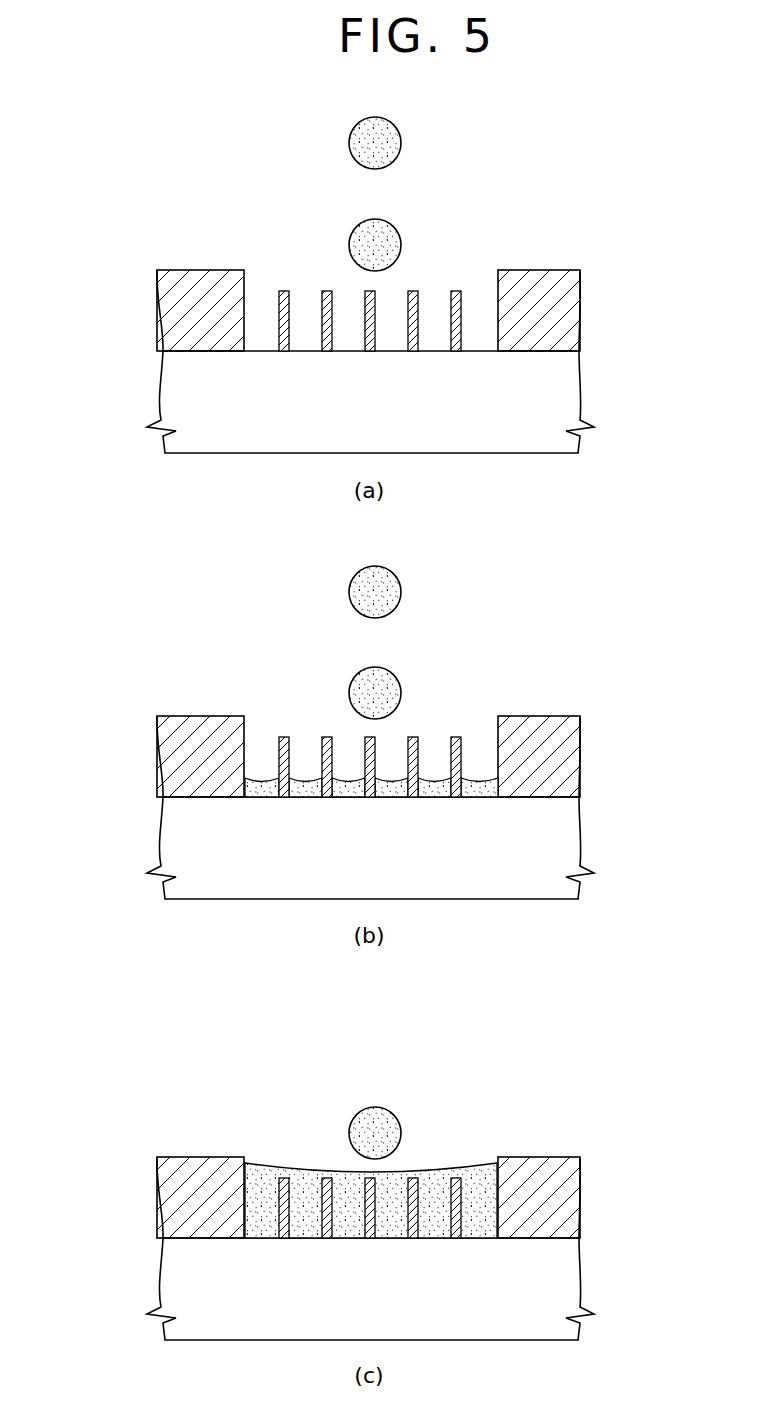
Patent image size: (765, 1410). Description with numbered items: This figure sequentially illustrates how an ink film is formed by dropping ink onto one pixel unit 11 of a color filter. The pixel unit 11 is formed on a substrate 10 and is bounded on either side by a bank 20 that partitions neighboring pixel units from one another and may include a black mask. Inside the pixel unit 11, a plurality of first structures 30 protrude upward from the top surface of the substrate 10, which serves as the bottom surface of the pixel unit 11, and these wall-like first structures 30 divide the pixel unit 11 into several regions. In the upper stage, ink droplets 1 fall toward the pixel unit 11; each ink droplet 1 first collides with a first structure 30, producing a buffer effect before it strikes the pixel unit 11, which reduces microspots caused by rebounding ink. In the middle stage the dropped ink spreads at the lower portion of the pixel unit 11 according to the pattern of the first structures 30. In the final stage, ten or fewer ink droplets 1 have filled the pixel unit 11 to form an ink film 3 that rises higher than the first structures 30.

The ink droplet 1 is at (416, 248).
The ink film 3 is at (490, 783).
The substrate 10 is at (170, 400).
The pixel unit 11 is at (318, 313).
The bank 20 is at (172, 316).
The first structure 30 is at (458, 305).